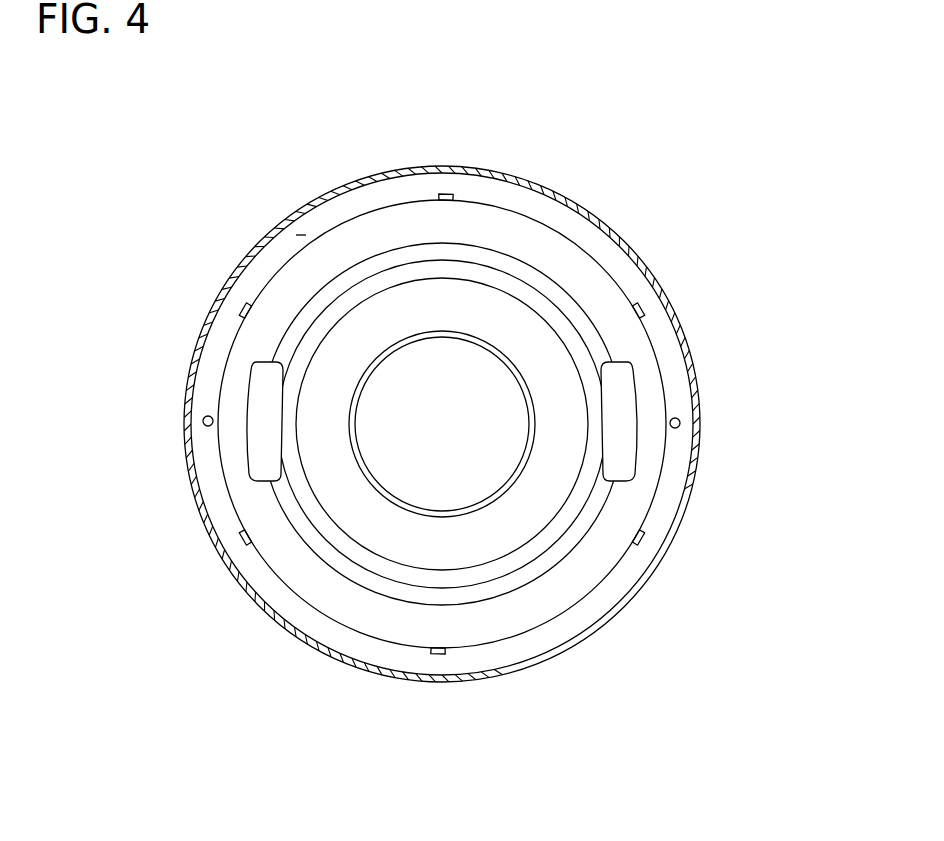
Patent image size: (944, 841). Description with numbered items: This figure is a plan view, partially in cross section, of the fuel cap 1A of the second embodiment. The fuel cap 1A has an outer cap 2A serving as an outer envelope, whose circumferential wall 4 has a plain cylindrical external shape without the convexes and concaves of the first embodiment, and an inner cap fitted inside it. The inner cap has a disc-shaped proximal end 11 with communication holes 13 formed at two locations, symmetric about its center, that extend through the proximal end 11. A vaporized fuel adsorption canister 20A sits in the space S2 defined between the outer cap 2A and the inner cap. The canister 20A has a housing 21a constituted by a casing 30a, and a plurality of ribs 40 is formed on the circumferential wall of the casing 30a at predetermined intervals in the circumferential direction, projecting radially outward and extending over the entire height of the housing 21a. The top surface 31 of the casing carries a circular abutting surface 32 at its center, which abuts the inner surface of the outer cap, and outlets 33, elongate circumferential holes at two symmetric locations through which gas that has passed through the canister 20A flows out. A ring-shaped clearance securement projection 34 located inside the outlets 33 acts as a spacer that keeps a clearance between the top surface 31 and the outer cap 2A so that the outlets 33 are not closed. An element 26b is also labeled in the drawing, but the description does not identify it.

The fuel cap 1A is at (420, 102).
The outer cap 2A is at (697, 385).
The circumferential wall 4 is at (193, 355).
The proximal end 11 is at (663, 495).
The communication holes 13 is at (203, 420).
The vaporized fuel adsorption canister 20A is at (610, 273).
The housing 21a is at (565, 235).
The engaging groove 26b is at (362, 210).
The casing 30a is at (530, 246).
The top surface 31 is at (493, 237).
The abutting surface 32 is at (443, 483).
The outlets 33 is at (253, 444).
The clearance securement projection 34 is at (510, 572).
The ribs 40 is at (449, 194).
The space S2 is at (300, 233).